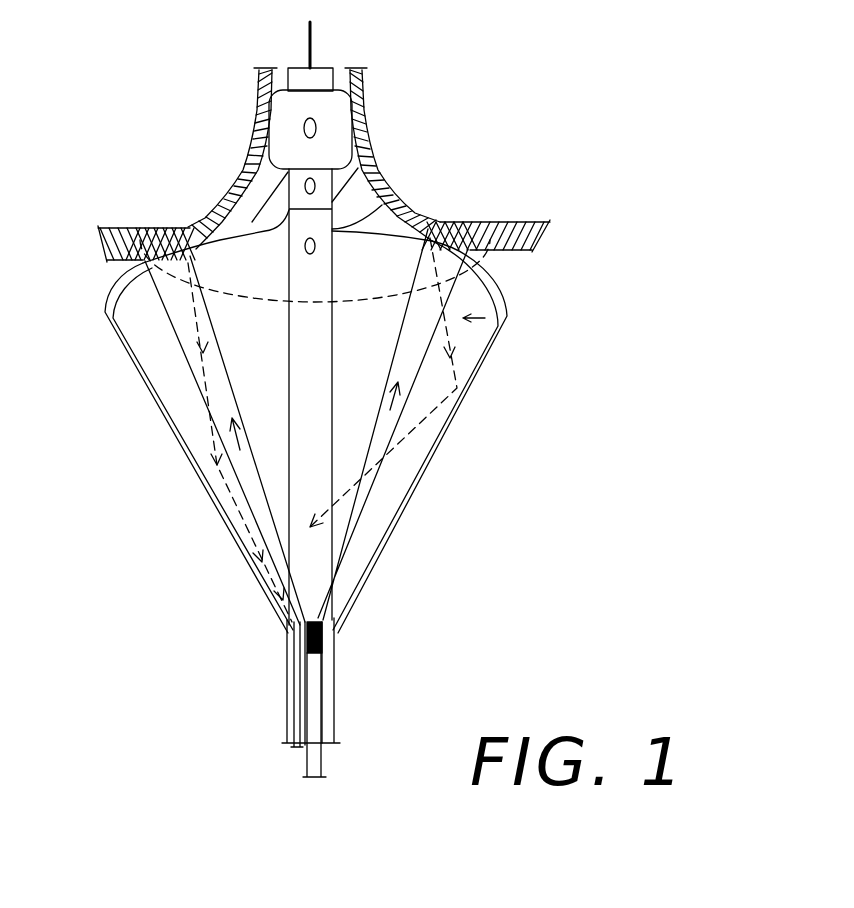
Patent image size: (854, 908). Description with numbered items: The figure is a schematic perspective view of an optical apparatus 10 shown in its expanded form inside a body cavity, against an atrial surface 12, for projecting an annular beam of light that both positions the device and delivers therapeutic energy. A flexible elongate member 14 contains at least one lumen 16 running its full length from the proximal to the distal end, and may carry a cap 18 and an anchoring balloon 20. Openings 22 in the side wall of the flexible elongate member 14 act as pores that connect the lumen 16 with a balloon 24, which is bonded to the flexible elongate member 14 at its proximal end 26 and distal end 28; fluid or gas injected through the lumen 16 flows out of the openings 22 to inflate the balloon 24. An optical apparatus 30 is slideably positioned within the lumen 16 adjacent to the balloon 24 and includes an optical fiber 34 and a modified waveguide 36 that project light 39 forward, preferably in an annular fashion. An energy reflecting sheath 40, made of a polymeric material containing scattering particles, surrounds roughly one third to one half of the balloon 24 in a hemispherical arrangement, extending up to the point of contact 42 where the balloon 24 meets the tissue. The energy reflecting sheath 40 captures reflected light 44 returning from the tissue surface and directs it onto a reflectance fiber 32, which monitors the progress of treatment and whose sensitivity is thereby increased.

The apparatus 10 is at (143, 126).
The atrial surface 12 is at (547, 218).
The flexible elongate member 14 is at (335, 725).
The lumen 16 is at (327, 705).
The cap 18 is at (320, 80).
The anchoring balloon 20 is at (332, 117).
The openings 22 is at (393, 196).
The balloon 24 is at (505, 325).
The proximal end 26 is at (333, 633).
The distal end 28 is at (367, 167).
The optical apparatus 30 is at (323, 645).
The reflectance fiber 32 is at (300, 678).
The optical fiber 34 is at (307, 760).
The modified waveguide 36 is at (293, 641).
The light 39 is at (247, 465).
The energy reflecting sheath 40 is at (113, 320).
The point of contact 42 is at (153, 230).
The reflected light 44 is at (213, 443).